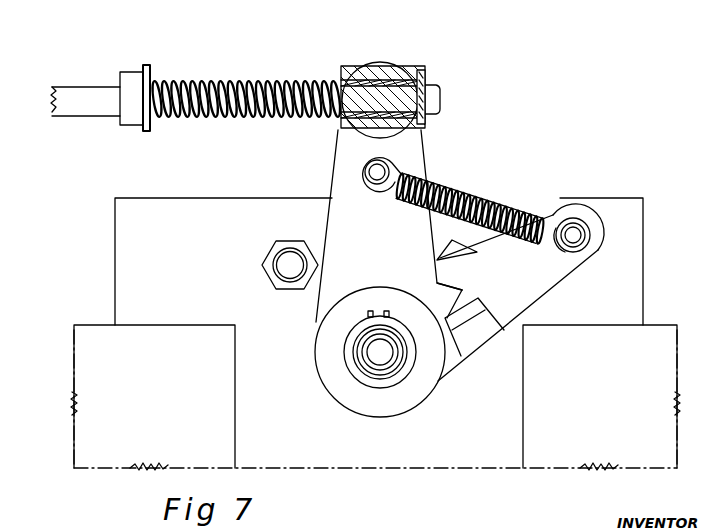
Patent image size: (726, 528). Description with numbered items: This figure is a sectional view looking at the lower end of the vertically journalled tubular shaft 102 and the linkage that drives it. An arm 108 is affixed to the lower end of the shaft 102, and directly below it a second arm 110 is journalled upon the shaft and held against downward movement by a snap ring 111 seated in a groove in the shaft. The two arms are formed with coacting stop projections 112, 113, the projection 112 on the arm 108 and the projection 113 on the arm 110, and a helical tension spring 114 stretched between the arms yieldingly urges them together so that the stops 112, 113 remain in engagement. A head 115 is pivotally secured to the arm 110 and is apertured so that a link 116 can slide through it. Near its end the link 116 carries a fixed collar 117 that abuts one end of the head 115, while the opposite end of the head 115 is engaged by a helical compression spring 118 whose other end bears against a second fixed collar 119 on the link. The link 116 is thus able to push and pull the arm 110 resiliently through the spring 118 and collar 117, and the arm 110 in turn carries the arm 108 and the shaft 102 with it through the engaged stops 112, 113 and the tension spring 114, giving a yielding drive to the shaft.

The tubular shaft 102 is at (380, 383).
The arm 108 is at (521, 292).
The arm 110 is at (396, 192).
The snap ring 111 is at (393, 326).
The stop projection 112 is at (470, 306).
The stop projection 113 is at (455, 296).
The helical tension spring 114 is at (465, 190).
The head 115 is at (404, 68).
The link 116 is at (105, 78).
The fixed collar 117 is at (428, 86).
The helical compression spring 118 is at (232, 86).
The fixed collar 119 is at (149, 73).